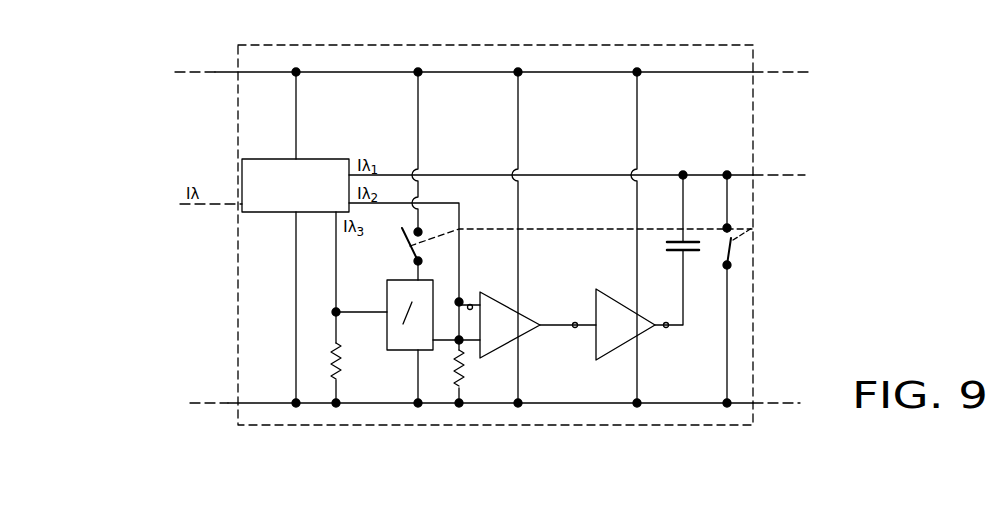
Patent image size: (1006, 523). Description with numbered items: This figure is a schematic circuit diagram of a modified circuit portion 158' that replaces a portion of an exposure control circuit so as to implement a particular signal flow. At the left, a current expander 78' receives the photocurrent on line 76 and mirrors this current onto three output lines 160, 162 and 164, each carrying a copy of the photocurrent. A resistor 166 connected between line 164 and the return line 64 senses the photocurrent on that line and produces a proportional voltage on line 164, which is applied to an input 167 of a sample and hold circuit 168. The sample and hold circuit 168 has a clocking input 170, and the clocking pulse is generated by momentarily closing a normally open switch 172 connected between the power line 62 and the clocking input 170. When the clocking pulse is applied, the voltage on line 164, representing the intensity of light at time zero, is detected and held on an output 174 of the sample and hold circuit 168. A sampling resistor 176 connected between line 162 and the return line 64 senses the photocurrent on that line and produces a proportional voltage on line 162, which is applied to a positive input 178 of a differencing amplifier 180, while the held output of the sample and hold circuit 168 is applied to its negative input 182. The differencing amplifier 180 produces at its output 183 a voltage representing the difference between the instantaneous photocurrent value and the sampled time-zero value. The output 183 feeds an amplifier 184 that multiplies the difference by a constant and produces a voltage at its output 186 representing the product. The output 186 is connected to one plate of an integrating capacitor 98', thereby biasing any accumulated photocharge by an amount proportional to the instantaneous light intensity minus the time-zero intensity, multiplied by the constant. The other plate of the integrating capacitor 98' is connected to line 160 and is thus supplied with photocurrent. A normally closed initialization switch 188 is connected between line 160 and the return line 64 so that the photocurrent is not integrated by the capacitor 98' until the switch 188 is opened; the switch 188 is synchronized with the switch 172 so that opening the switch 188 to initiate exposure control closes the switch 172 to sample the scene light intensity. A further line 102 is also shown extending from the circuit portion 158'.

The power line 62 is at (229, 71).
The return line 64 is at (232, 403).
The line 76 is at (229, 207).
The current expander 78' is at (295, 164).
The circuit portion 158' is at (495, 219).
The output line 102 is at (778, 170).
The output line 160 is at (417, 160).
The output line 162 is at (447, 201).
The output line 164 is at (338, 264).
The resistor 166 is at (332, 360).
The input 167 is at (355, 311).
The sample and hold circuit 168 is at (396, 351).
The clocking input 170 is at (416, 263).
The normally open switch 172 is at (398, 246).
The output 174 is at (460, 347).
The sampling resistor 176 is at (464, 372).
The positive input 178 is at (470, 308).
The differencing amplifier 180 is at (505, 306).
The negative input 182 is at (470, 341).
The output 183 is at (577, 325).
The amplifier 184 is at (615, 300).
The output 186 is at (666, 327).
The integrating capacitor 98' is at (691, 237).
The normally closed initialization switch 188 is at (733, 250).